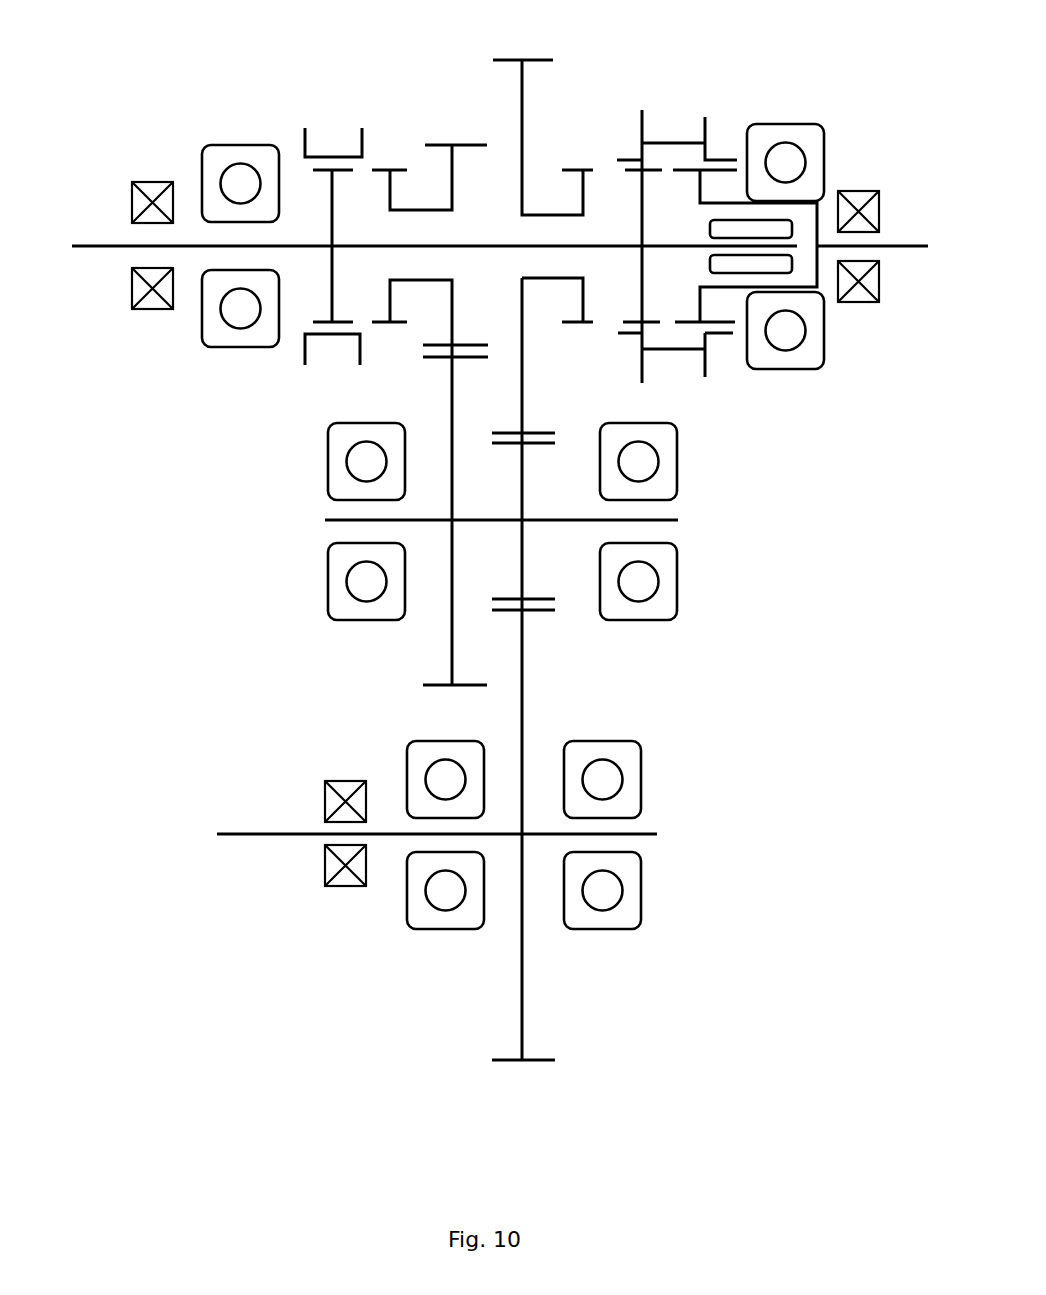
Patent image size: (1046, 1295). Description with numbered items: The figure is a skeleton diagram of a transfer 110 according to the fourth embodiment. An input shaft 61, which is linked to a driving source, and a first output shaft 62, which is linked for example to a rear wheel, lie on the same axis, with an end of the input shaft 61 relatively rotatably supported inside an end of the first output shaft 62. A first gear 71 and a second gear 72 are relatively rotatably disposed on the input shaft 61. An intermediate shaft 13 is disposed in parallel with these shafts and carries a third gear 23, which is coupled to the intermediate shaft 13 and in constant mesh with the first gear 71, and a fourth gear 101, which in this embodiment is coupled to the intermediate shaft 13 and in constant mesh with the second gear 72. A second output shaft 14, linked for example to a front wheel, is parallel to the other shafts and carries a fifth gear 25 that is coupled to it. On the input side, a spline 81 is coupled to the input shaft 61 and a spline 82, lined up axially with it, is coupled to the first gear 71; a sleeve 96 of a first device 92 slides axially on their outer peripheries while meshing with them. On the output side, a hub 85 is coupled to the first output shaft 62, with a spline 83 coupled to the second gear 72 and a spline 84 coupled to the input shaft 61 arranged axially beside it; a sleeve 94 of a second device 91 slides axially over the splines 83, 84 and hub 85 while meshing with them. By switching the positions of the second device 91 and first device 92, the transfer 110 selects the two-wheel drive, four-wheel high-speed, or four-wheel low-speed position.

The transfer 110 is at (850, 94).
The second device 91 is at (702, 209).
The first device 92 is at (309, 214).
The sleeve 96 is at (305, 141).
The sleeve 94 is at (645, 128).
The first gear 71 is at (440, 145).
The second gear 72 is at (541, 60).
The spline 83 is at (572, 170).
The spline 81 is at (321, 337).
The spline 82 is at (398, 325).
The spline 84 is at (637, 325).
The hub 85 is at (722, 325).
The input shaft 61 is at (95, 248).
The first output shaft 62 is at (915, 248).
The intermediate shaft 13 is at (338, 522).
The second output shaft 14 is at (258, 836).
The third gear 23 is at (437, 688).
The fifth gear 25 is at (540, 1062).
The fourth gear 101 is at (538, 602).